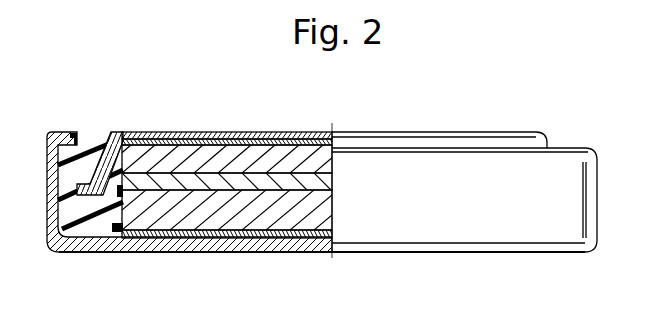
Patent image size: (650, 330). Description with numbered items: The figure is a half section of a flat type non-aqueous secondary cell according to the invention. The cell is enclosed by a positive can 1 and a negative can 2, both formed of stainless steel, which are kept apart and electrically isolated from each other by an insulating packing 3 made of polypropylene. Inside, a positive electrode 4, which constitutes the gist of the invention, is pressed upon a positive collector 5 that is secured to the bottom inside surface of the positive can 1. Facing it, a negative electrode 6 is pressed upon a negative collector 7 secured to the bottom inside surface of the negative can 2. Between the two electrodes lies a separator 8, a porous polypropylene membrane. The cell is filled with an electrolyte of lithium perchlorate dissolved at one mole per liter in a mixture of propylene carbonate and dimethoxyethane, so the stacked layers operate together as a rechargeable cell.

The positive can 1 is at (102, 252).
The negative can 2 is at (205, 140).
The insulating packing 3 is at (78, 158).
The positive electrode 4 is at (233, 223).
The positive collector 5 is at (195, 225).
The negative electrode 6 is at (245, 158).
The negative collector 7 is at (282, 148).
The separator 8 is at (143, 183).